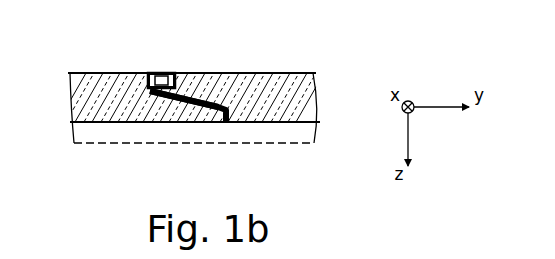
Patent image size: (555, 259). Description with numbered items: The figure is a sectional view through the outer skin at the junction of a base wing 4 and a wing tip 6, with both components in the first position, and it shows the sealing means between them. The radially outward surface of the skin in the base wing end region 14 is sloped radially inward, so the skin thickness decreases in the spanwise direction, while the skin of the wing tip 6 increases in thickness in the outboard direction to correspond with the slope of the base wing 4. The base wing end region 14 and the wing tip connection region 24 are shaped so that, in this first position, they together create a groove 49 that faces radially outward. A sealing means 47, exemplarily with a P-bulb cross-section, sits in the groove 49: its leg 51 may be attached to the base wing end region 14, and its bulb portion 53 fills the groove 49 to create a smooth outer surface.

The base wing 4 is at (105, 113).
The wing tip 6 is at (262, 113).
The base wing end region 14 is at (147, 71).
The wing tip connection region 24 is at (279, 71).
The sealing means 47 is at (163, 76).
The groove 49 is at (181, 87).
The leg 51 is at (198, 112).
The bulb portion 53 is at (176, 72).